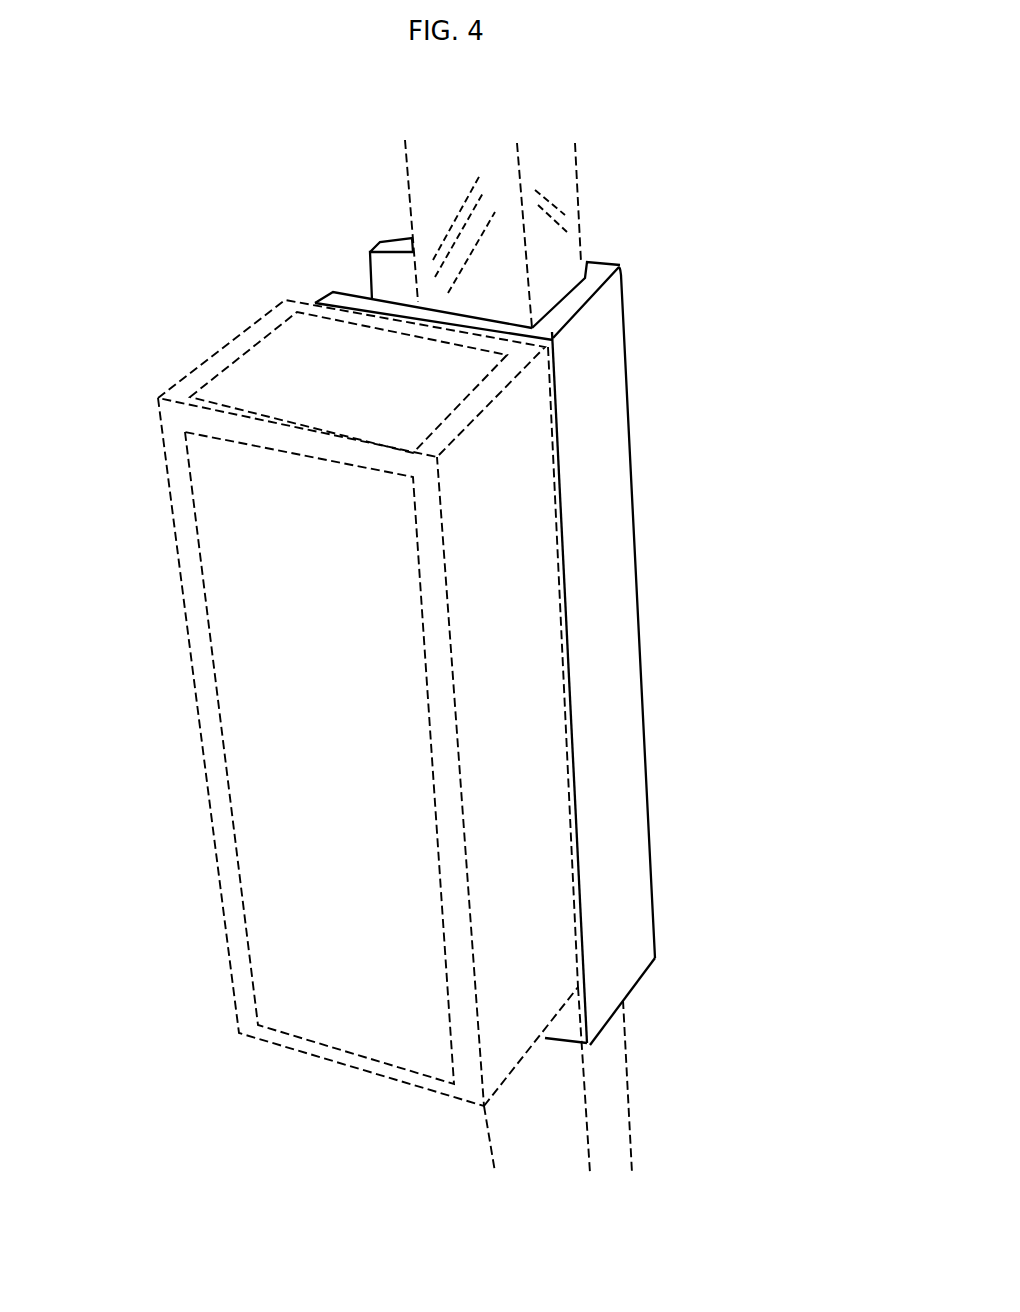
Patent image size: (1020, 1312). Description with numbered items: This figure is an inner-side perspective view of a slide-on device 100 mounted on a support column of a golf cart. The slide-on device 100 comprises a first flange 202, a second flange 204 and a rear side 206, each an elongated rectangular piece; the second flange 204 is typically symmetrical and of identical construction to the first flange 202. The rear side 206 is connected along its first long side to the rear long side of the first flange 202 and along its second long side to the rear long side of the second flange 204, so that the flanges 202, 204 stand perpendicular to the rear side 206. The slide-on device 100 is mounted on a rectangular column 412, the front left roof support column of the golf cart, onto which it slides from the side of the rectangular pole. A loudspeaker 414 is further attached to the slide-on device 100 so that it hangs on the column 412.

The slide-on device 100 is at (675, 333).
The first flange 202 is at (388, 238).
The second flange 204 is at (353, 300).
The rear side 206 is at (597, 527).
The rectangular column 412 is at (585, 182).
The loudspeaker 414 is at (196, 708).